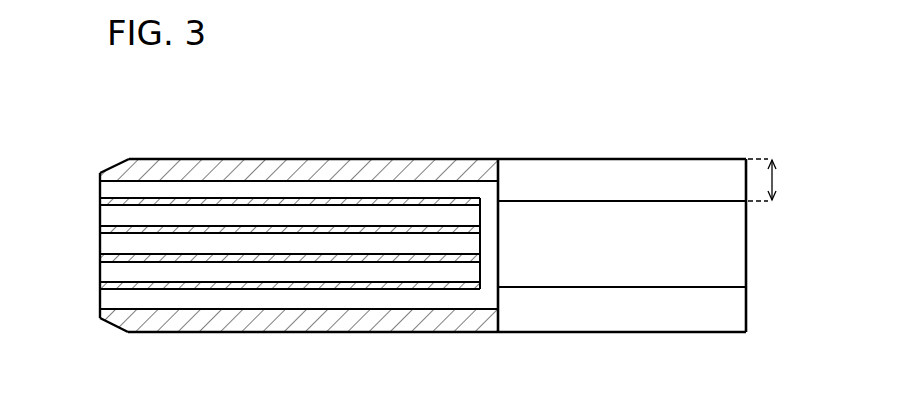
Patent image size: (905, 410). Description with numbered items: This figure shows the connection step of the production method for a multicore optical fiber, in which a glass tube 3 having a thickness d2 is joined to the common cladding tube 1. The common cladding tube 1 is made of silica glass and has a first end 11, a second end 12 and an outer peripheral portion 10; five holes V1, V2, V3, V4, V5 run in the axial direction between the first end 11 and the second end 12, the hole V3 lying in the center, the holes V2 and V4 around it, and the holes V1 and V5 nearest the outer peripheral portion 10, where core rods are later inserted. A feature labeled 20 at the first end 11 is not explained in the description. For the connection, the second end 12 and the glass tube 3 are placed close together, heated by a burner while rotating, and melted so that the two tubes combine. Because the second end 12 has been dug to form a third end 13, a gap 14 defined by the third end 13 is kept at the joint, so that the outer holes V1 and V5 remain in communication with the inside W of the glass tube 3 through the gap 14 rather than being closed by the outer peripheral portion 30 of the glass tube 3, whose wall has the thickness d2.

The common cladding tube 1 is at (443, 144).
The glass tube 3 is at (705, 149).
The outer peripheral portion 10 is at (323, 158).
The first end 11 is at (100, 172).
The second end 12 is at (504, 158).
The third end 13 is at (486, 197).
The gap 14 is at (480, 190).
The chamfered portion 20 is at (109, 167).
The outer peripheral portion of the glass tube 30 is at (652, 158).
The hole V1 is at (157, 189).
The hole V2 is at (203, 215).
The hole V3 is at (250, 245).
The hole V4 is at (175, 272).
The hole V5 is at (253, 300).
The inside of the glass tube W is at (738, 239).
The thickness d2 is at (776, 179).